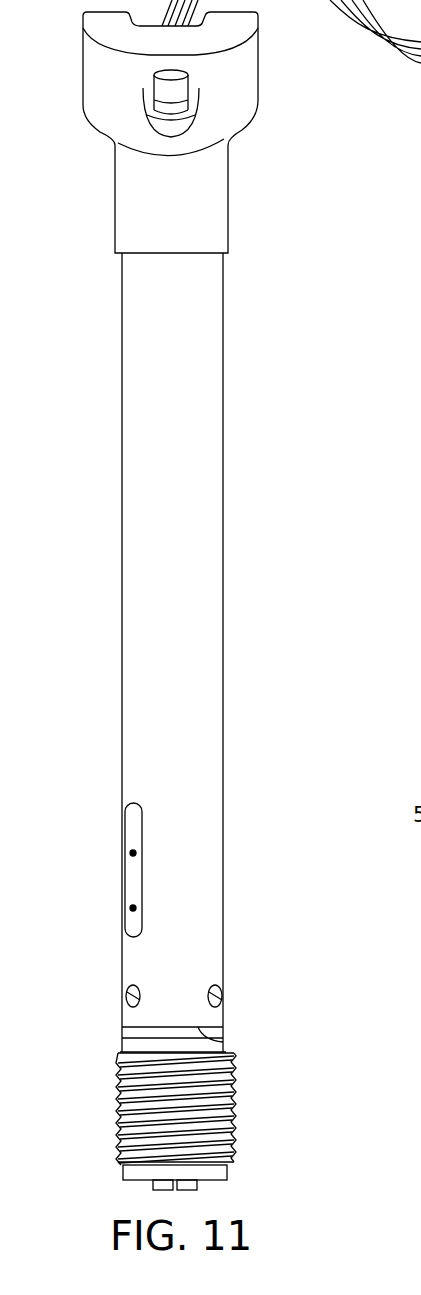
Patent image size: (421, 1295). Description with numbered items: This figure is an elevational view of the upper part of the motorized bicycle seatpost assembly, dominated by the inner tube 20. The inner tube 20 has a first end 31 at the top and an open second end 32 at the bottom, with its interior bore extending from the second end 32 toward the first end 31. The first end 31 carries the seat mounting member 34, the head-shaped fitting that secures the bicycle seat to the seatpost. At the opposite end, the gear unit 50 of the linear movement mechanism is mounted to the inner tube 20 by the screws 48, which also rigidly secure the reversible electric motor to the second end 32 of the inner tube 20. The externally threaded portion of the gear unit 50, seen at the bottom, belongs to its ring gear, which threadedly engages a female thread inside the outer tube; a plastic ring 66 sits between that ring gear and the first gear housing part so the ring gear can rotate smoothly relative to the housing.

The seat mounting member 34 is at (259, 70).
The first end 31 is at (222, 262).
The inner tube 20 is at (223, 583).
The screws 48 is at (127, 991).
The plastic ring 66 is at (122, 1046).
The second end 32 is at (226, 1046).
The gear unit 50 is at (252, 1103).